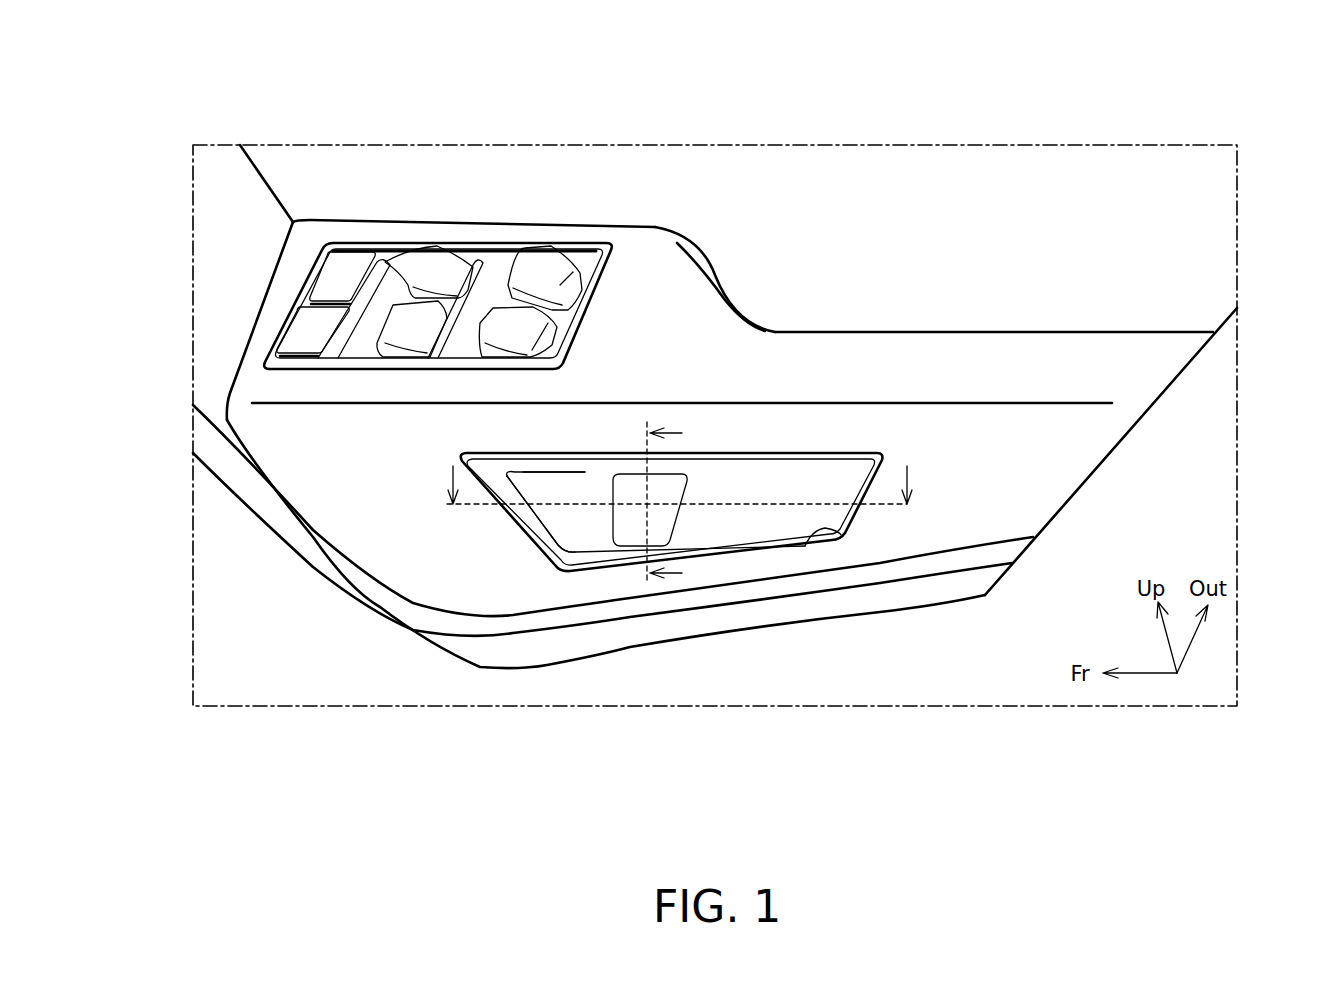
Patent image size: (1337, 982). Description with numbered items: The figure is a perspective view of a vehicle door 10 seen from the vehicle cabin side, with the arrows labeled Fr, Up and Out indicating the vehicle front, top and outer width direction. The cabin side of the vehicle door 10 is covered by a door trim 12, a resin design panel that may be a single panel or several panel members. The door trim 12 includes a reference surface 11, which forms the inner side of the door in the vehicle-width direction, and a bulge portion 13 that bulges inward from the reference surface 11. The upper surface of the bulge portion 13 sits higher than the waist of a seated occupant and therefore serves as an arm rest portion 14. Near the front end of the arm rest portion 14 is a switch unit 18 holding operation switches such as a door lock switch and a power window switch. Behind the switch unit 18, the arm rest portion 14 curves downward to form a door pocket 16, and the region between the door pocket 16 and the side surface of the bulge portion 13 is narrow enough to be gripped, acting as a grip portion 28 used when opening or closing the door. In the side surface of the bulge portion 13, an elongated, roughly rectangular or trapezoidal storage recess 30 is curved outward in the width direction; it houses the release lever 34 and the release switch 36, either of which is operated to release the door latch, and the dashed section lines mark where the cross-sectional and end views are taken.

The vehicle door 10 is at (783, 128).
The reference surface 11 is at (856, 241).
The door trim 12 is at (366, 187).
The bulge portion 13 is at (352, 500).
The arm rest portion 14 is at (635, 317).
The door pocket 16 is at (1147, 317).
The switch unit 18 is at (433, 277).
The grip portion 28 is at (993, 350).
The storage recess 30 is at (810, 547).
The release lever 34 is at (553, 553).
The release switch 36 is at (632, 535).